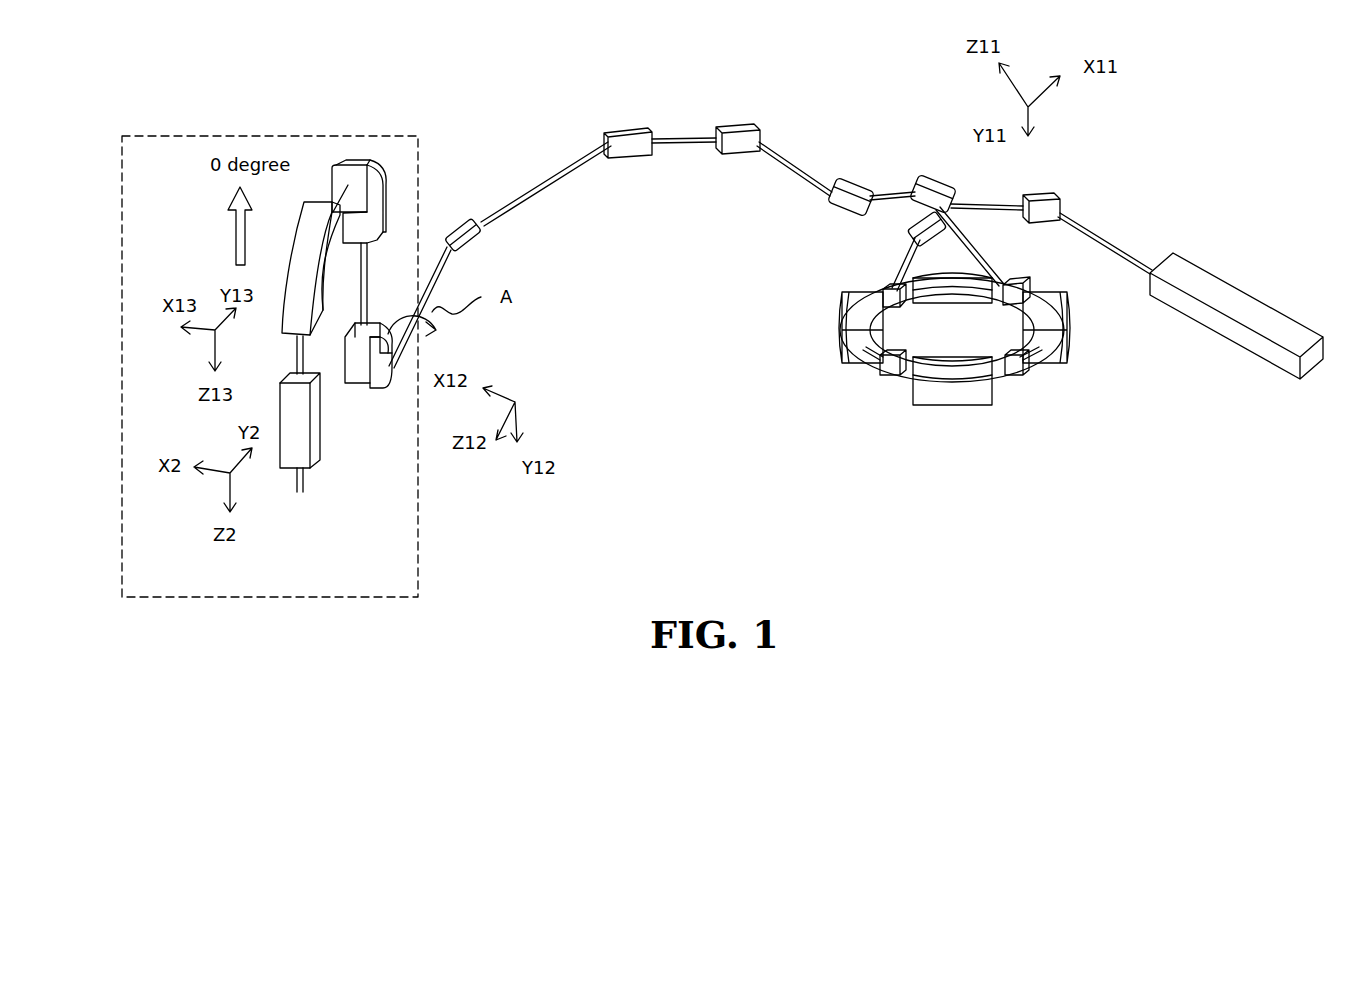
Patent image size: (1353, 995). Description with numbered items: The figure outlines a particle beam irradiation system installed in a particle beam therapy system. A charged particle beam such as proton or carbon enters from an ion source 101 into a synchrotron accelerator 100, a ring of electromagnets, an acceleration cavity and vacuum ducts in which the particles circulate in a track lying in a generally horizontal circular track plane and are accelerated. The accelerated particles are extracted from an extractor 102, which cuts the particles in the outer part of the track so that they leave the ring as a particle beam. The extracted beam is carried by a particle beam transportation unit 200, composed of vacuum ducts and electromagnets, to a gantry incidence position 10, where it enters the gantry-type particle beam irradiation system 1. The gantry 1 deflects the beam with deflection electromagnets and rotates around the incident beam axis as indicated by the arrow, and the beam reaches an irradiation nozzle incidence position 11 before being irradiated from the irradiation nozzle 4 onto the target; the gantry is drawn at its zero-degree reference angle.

The gantry-type particle beam irradiation system 1 is at (300, 135).
The irradiation nozzle 4 is at (322, 410).
The gantry incidence position 10 is at (390, 362).
The irradiation nozzle incidence position 11 is at (296, 378).
The synchrotron accelerator 100 is at (1018, 403).
The ion source 101 is at (1213, 265).
The extractor 102 is at (1036, 148).
The particle beam transportation unit 200 is at (675, 100).